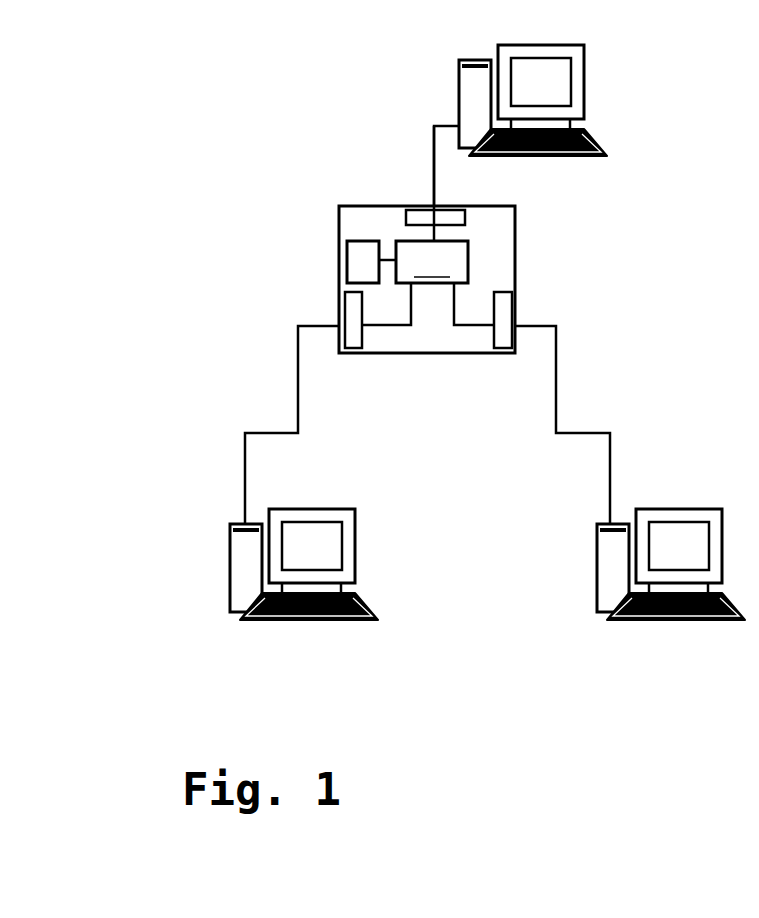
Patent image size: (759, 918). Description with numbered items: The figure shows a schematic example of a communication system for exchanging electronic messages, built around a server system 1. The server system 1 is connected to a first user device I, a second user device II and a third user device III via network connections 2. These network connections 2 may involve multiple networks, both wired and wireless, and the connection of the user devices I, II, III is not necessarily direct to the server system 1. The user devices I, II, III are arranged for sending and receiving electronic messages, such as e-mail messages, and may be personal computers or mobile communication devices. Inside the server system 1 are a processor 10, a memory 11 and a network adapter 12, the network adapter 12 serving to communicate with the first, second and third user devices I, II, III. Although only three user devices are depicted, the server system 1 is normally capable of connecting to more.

The server system 1 is at (515, 239).
The network connections 2 is at (434, 148).
The processor 10 is at (432, 262).
The memory 11 is at (358, 260).
The network adapter 12 is at (443, 214).
The first user device I is at (285, 564).
The second user device II is at (650, 564).
The third user device III is at (502, 100).